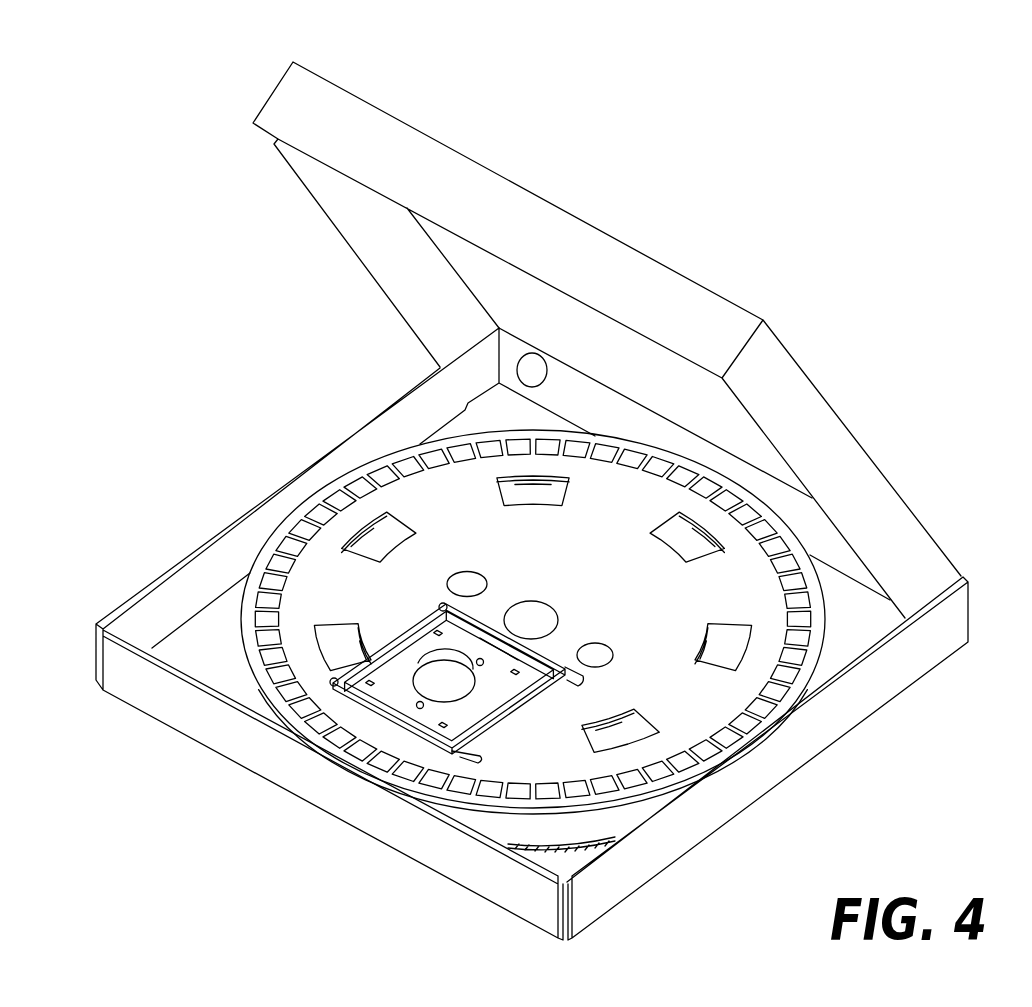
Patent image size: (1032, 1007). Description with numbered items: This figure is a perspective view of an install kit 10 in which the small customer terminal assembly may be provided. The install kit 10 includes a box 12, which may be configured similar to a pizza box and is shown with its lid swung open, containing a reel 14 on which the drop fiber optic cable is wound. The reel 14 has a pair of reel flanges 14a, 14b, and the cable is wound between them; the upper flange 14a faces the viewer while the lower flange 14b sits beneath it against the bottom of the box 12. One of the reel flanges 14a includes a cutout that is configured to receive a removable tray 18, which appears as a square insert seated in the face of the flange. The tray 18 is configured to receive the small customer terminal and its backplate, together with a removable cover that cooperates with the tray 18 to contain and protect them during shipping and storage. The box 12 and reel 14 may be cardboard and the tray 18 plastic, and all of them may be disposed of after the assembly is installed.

The install kit 10 is at (556, 501).
The box 12 is at (657, 283).
The reel 14 is at (564, 706).
The reel flange 14a is at (630, 802).
The reel flange 14b is at (585, 847).
The removable tray 18 is at (467, 735).